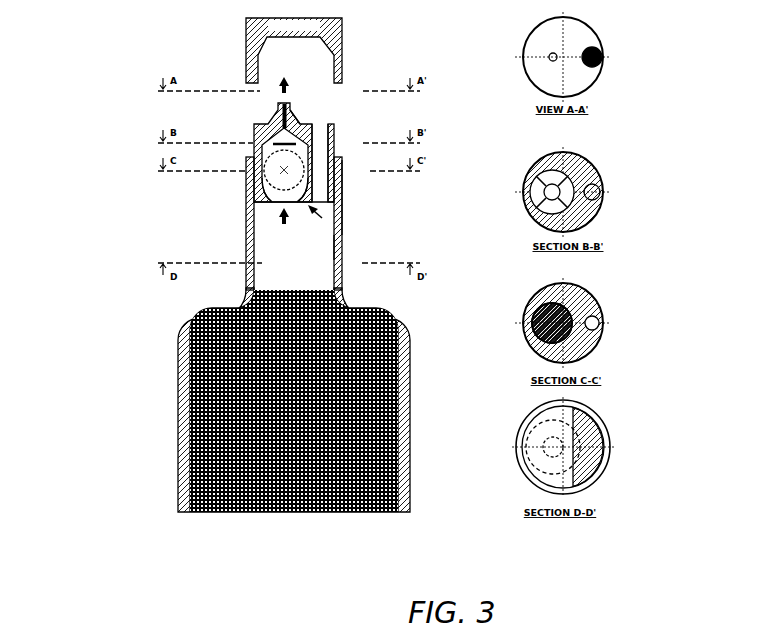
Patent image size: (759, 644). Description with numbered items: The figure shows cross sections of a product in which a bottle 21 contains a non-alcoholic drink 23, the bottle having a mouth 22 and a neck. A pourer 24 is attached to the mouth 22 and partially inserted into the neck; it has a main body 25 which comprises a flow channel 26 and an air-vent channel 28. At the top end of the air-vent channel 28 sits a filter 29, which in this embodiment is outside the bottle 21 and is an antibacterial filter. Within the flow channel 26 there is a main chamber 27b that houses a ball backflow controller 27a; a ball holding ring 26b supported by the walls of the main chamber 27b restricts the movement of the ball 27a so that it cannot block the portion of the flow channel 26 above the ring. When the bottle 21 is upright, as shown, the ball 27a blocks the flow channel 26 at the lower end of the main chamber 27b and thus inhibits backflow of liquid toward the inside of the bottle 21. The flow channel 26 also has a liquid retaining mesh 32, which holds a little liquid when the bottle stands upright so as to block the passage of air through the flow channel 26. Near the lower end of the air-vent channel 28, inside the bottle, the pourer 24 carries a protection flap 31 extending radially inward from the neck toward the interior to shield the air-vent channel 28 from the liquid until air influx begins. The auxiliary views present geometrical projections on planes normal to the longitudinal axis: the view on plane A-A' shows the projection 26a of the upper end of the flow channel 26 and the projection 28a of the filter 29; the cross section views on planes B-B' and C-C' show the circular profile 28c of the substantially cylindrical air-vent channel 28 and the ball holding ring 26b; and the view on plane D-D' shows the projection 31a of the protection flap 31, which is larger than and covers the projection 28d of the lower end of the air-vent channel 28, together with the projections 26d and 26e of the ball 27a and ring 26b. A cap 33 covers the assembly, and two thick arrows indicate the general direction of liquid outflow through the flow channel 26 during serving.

The bottle 21 is at (175, 346).
The mouth 22 is at (250, 152).
The non-alcoholic drink 23 is at (165, 418).
The pourer 24 is at (250, 123).
The main body 25 is at (300, 113).
The flow channel 26 is at (265, 197).
The geometrical projection of the upper end of the flow channel 26a is at (551, 54).
The ball holding ring 26b is at (540, 170).
The geometrical projection of the ball 26d is at (540, 430).
The geometrical projection of the ring 26e is at (544, 445).
The ball backflow controller 27a is at (262, 178).
The main chamber 27b is at (333, 187).
The air-vent channel 28 is at (323, 156).
The geometrical projection of the filter 28a is at (600, 53).
The circular cross sectional profile of the air-vent channel 28c is at (598, 318).
The geometrical projection of the lower end of the air-vent channel 28d is at (600, 446).
The filter 29 is at (331, 124).
The protection flap 31 is at (341, 237).
The geometrical projection of the protection flap 31a is at (597, 468).
The liquid retaining mesh 32 is at (278, 118).
The cap 33 is at (240, 46).